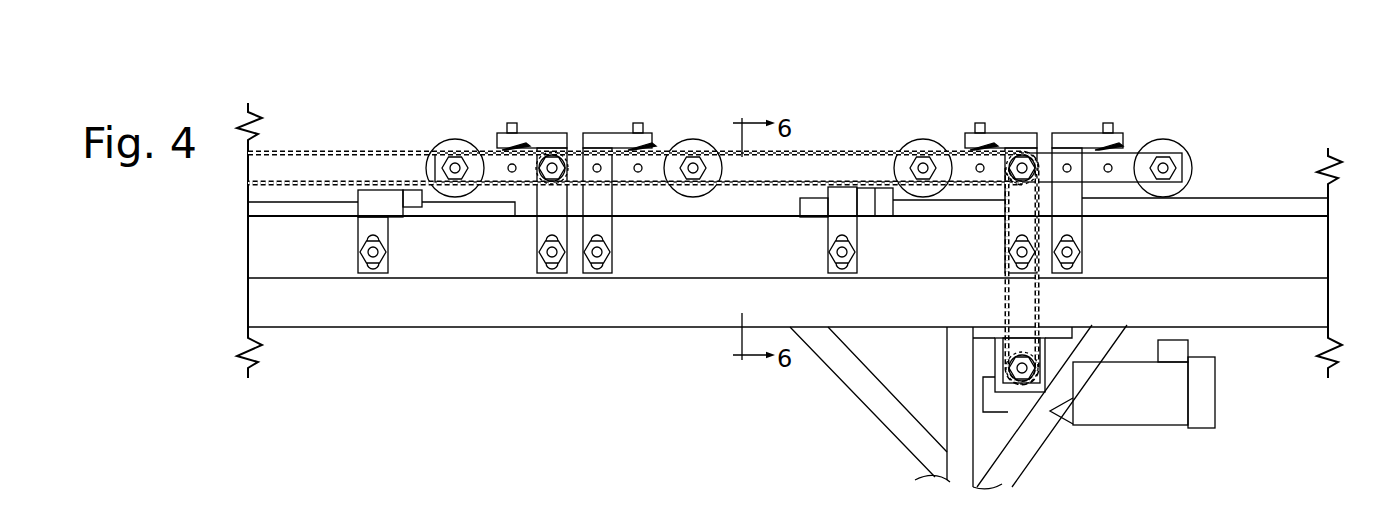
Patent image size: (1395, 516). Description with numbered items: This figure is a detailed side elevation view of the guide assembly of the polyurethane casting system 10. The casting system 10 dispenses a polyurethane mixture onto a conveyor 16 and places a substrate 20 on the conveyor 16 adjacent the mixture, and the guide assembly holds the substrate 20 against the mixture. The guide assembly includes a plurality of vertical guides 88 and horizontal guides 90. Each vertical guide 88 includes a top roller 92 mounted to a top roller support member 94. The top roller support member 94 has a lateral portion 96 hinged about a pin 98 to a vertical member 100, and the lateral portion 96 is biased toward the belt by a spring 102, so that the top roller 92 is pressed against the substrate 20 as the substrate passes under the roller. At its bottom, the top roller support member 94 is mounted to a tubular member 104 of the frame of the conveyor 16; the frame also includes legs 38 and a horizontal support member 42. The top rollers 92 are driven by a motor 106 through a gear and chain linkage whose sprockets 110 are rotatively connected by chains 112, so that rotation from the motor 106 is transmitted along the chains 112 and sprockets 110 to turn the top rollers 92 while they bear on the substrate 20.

The polyurethane casting system 10 is at (1258, 83).
The conveyor 16 is at (650, 436).
The substrate 20 is at (1257, 196).
The legs 38 is at (946, 388).
The horizontal support member 42 is at (372, 330).
The vertical guides 88 is at (474, 84).
The horizontal guides 90 is at (407, 242).
The top roller 92 is at (451, 139).
The top roller support member 94 is at (604, 130).
The lateral portion 96 is at (1192, 163).
The pin 98 is at (1068, 174).
The vertical member 100 is at (1084, 262).
The spring 102 is at (640, 149).
The tubular member 104 is at (1298, 244).
The motor 106 is at (1114, 428).
The sprockets 110 is at (1006, 220).
The chains 112 is at (284, 151).